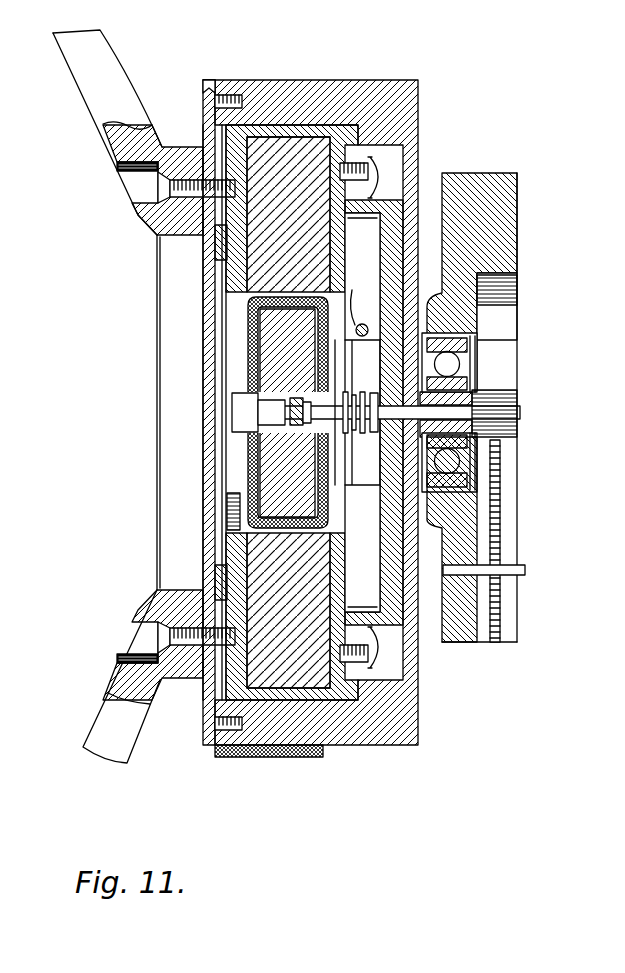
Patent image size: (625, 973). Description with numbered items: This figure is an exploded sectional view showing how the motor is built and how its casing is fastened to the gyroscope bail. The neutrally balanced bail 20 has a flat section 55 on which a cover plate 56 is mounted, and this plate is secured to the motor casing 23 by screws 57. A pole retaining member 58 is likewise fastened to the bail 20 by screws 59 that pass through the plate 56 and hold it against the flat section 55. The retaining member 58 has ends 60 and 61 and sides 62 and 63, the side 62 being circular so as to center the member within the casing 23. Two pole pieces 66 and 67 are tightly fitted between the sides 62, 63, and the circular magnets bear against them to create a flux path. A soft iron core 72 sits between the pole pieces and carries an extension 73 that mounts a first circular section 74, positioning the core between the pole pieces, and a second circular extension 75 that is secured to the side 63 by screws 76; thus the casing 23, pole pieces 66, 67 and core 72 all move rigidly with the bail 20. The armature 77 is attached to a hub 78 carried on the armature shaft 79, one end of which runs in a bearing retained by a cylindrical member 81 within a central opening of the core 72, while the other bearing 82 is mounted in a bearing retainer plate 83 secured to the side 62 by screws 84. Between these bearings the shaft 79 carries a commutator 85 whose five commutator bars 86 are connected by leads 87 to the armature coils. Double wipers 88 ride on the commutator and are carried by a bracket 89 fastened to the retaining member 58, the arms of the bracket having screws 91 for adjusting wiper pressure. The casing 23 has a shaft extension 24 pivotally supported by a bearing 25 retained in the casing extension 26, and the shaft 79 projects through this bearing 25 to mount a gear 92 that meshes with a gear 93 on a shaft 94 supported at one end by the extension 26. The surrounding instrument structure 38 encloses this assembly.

The bail 20 is at (113, 67).
The motor casing 23 is at (357, 82).
The shaft extension 24 is at (466, 387).
The bearing 25 is at (468, 343).
The casing extension 26 is at (458, 636).
The gear housing 38 is at (388, 747).
The flat section 55 is at (178, 152).
The cover plate 56 is at (212, 90).
The screws 57 is at (213, 102).
The pole retaining member 58 is at (283, 122).
The screws 59 is at (160, 192).
The end 60 is at (310, 127).
The end 61 is at (305, 683).
The side 62 is at (362, 548).
The side 63 is at (224, 272).
The pole piece 66 is at (268, 140).
The pole piece 67 is at (273, 683).
The soft iron core 72 is at (203, 480).
The extension 73 is at (232, 408).
The first circular section 74 is at (238, 413).
The second circular extension 75 is at (220, 358).
The screws 76 is at (215, 240).
The armature 77 is at (203, 337).
The hub 78 is at (334, 478).
The armature shaft 79 is at (305, 404).
The cylindrical member 81 is at (292, 398).
The bearing 82 is at (366, 396).
The bearing retainer plate 83 is at (382, 186).
The screws 84 is at (377, 172).
The commutator 85 is at (373, 434).
The commutator bars 86 is at (347, 422).
The leads 87 is at (328, 348).
The double wipers 88 is at (370, 336).
The bracket 89 is at (362, 276).
The screws 91 is at (356, 295).
The gear 92 is at (518, 405).
The gear 93 is at (498, 542).
The shaft 94 is at (522, 568).